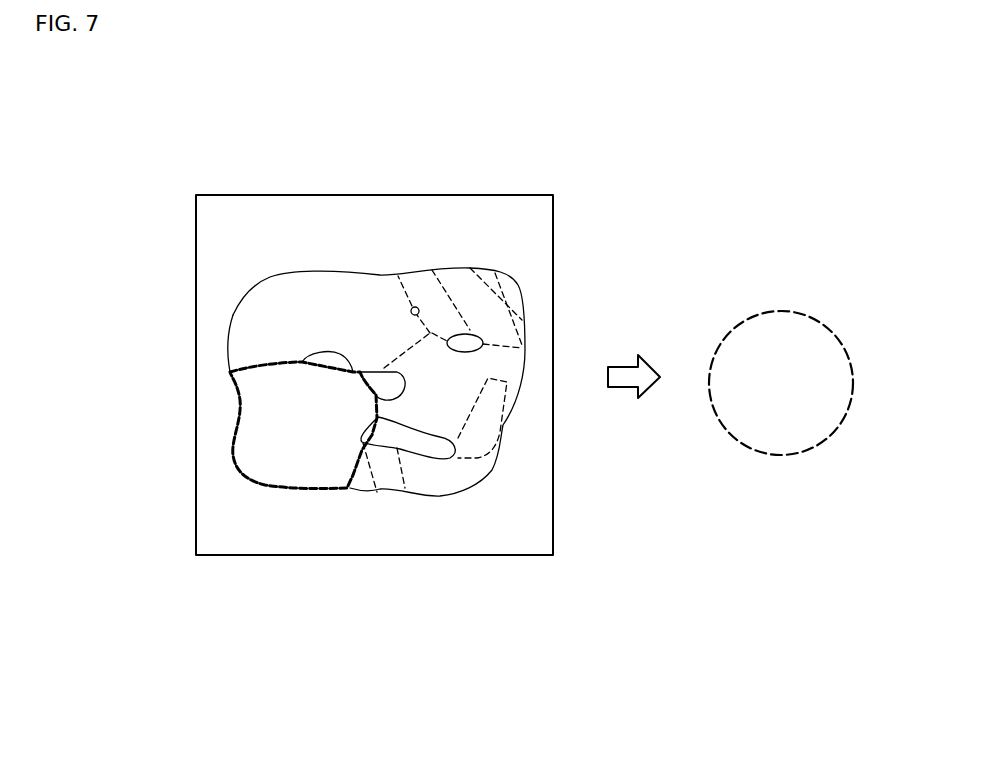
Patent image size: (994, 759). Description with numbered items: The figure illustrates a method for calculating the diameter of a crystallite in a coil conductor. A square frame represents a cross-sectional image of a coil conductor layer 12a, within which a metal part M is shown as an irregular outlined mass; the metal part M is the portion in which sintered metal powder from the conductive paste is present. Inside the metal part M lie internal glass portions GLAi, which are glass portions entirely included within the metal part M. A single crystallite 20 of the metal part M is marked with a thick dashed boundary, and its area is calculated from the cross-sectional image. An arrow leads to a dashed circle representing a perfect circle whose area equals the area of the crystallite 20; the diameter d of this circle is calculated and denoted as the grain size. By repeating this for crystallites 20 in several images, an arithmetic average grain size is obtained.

The coil conductor layer 12a is at (233, 315).
The metal part M is at (296, 293).
The crystallite 20 is at (303, 468).
The internal glass portion GLAi is at (433, 445).
The diameter d is at (851, 383).